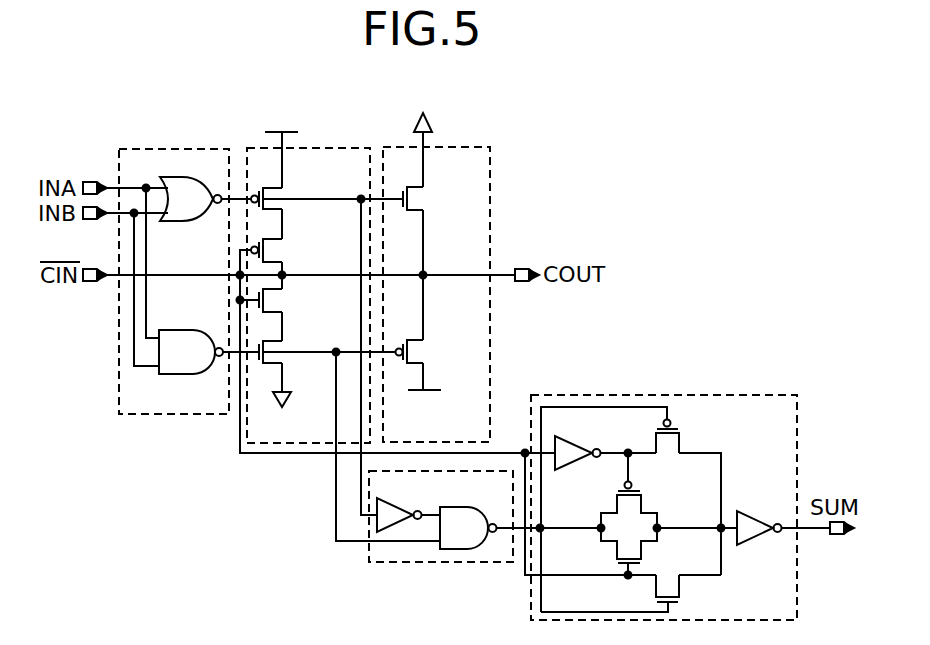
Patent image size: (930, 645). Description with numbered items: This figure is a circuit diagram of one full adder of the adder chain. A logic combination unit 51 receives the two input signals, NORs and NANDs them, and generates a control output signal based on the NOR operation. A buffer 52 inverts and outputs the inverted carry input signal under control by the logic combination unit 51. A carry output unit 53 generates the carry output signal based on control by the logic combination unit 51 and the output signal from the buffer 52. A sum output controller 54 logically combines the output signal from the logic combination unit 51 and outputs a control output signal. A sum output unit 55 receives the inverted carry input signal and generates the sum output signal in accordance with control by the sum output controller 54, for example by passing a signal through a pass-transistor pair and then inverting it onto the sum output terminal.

The logic combination unit 51 is at (161, 148).
The buffer 52 is at (318, 148).
The carry output unit 53 is at (463, 147).
The sum output controller 54 is at (405, 562).
The sum output unit 55 is at (688, 395).